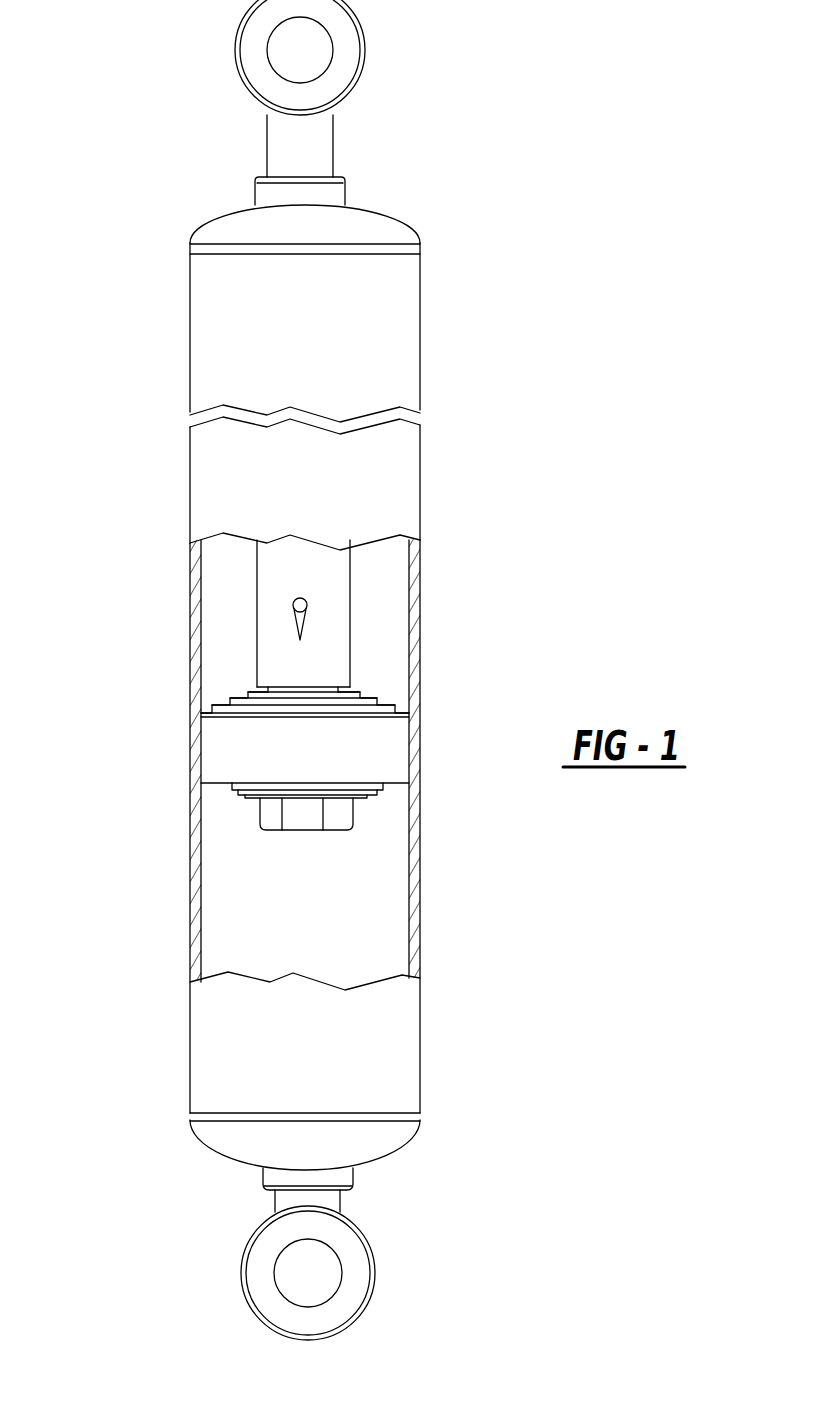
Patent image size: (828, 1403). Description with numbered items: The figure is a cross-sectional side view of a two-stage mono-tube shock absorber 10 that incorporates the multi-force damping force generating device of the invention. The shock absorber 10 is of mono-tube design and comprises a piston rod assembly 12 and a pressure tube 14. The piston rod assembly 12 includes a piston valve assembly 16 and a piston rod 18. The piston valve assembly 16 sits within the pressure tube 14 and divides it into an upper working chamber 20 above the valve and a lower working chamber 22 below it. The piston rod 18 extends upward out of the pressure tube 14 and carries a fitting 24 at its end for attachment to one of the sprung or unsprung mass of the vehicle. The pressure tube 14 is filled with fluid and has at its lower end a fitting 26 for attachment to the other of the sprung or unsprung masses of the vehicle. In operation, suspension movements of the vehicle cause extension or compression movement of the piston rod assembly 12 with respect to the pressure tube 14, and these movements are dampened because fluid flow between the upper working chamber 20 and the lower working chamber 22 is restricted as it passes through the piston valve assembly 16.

The shock absorber 10 is at (339, 670).
The piston rod assembly 12 is at (386, 735).
The pressure tube 14 is at (421, 892).
The piston valve assembly 16 is at (232, 737).
The piston rod 18 is at (320, 572).
The upper working chamber 20 is at (224, 594).
The lower working chamber 22 is at (252, 892).
The fitting 24 is at (360, 25).
The fitting 26 is at (375, 1270).